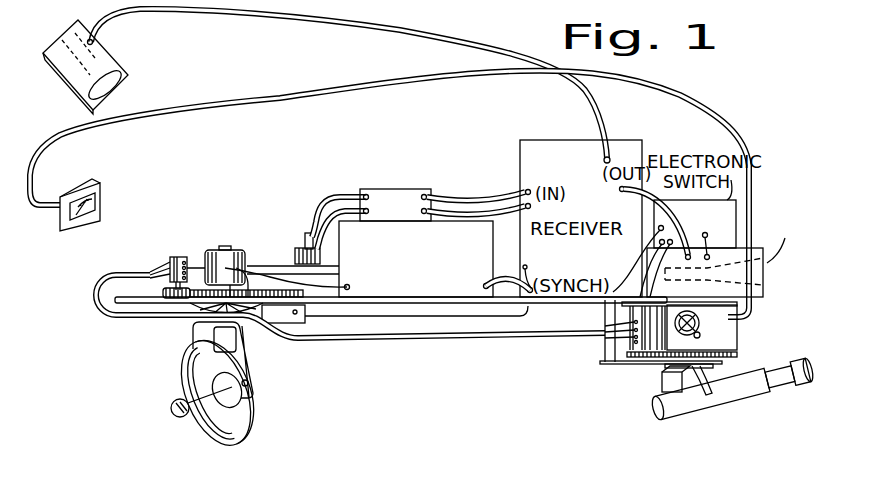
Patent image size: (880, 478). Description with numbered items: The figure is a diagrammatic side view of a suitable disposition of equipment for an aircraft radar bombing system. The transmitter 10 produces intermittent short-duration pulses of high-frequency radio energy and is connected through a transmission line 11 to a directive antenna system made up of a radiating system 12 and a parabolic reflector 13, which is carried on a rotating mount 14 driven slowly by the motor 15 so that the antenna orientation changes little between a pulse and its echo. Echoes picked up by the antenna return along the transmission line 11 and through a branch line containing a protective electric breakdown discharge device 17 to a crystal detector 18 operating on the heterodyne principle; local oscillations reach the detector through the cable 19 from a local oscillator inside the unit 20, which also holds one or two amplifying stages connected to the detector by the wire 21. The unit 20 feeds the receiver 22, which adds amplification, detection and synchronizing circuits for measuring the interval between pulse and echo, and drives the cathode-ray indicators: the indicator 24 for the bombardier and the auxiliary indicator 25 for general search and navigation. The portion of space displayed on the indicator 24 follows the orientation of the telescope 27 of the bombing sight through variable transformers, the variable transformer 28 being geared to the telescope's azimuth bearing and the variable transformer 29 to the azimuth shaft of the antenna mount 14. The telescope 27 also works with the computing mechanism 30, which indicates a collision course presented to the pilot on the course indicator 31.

The transmitter 10 is at (416, 259).
The transmission line 11 is at (263, 266).
The radiating system 12 is at (201, 419).
The parabolic reflector 13 is at (264, 393).
The rotating mount 14 is at (250, 343).
The motor 15 is at (212, 250).
The protective electric breakdown discharge device 17 is at (298, 250).
The crystal detector 18 is at (306, 233).
The cable 19 is at (343, 200).
The unit 20 is at (396, 189).
The wire 21 is at (318, 197).
The receiver 22 is at (638, 222).
The indicator 24 is at (765, 288).
The auxiliary indicator 25 is at (110, 56).
The telescope 27 is at (700, 407).
The variable transformer 28 is at (606, 352).
The variable transformer 29 is at (170, 262).
The computing mechanism 30 is at (725, 332).
The course indicator 31 is at (60, 232).